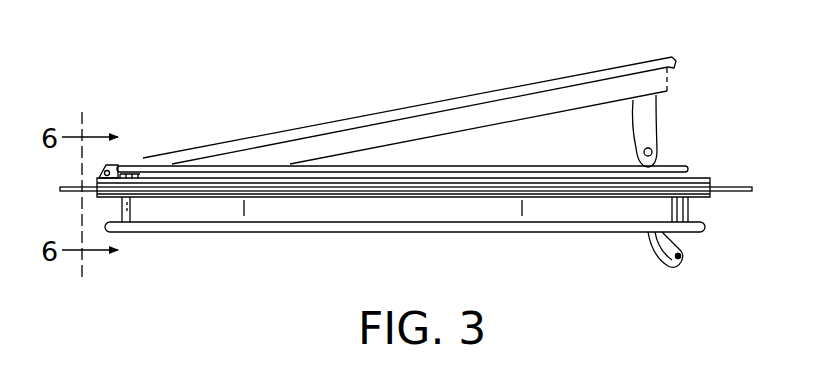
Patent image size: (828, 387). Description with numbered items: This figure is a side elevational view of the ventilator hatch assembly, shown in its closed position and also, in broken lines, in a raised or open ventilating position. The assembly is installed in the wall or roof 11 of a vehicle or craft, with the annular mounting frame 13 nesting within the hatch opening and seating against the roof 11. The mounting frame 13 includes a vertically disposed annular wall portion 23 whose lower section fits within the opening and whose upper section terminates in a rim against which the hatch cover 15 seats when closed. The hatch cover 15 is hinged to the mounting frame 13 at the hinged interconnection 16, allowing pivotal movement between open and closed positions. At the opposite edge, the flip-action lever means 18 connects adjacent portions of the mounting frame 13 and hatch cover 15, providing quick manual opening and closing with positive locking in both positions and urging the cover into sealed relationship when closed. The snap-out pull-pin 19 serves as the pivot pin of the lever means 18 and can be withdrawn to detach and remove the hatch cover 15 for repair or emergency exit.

The roof 11 is at (740, 197).
The mounting frame 13 is at (363, 242).
The hatch cover 15 is at (547, 166).
The hinged interconnection 16 is at (113, 163).
The flip-action lever means 18 is at (655, 151).
The snap-out pull-pin 19 is at (681, 257).
The annular wall portion 23 is at (298, 207).